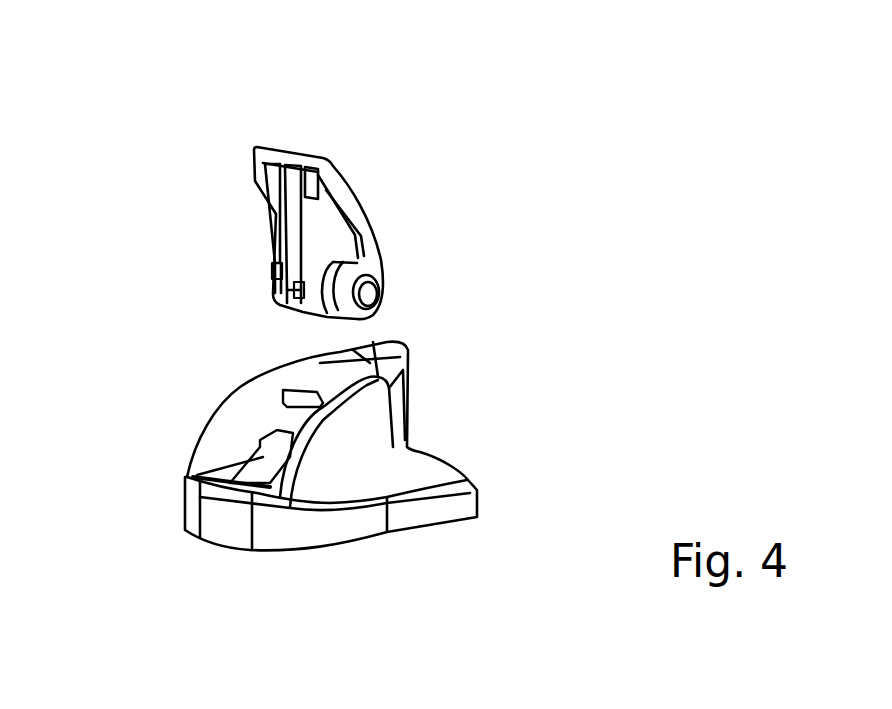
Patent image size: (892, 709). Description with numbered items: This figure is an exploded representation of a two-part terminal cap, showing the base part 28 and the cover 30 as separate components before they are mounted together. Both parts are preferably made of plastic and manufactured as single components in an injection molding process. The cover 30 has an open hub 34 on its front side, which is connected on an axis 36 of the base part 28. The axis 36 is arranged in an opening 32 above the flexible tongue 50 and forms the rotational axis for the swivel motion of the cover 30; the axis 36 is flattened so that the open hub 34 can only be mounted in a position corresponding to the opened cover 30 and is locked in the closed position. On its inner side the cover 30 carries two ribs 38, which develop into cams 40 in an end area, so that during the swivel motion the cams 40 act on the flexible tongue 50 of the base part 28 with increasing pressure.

The base part 28 is at (368, 433).
The cover 30 is at (358, 192).
The opening 32 is at (252, 420).
The open hub 34 is at (363, 292).
The axis 36 is at (287, 390).
The ribs 38 is at (300, 230).
The cams 40 is at (300, 287).
The flexible tongue 50 is at (192, 478).